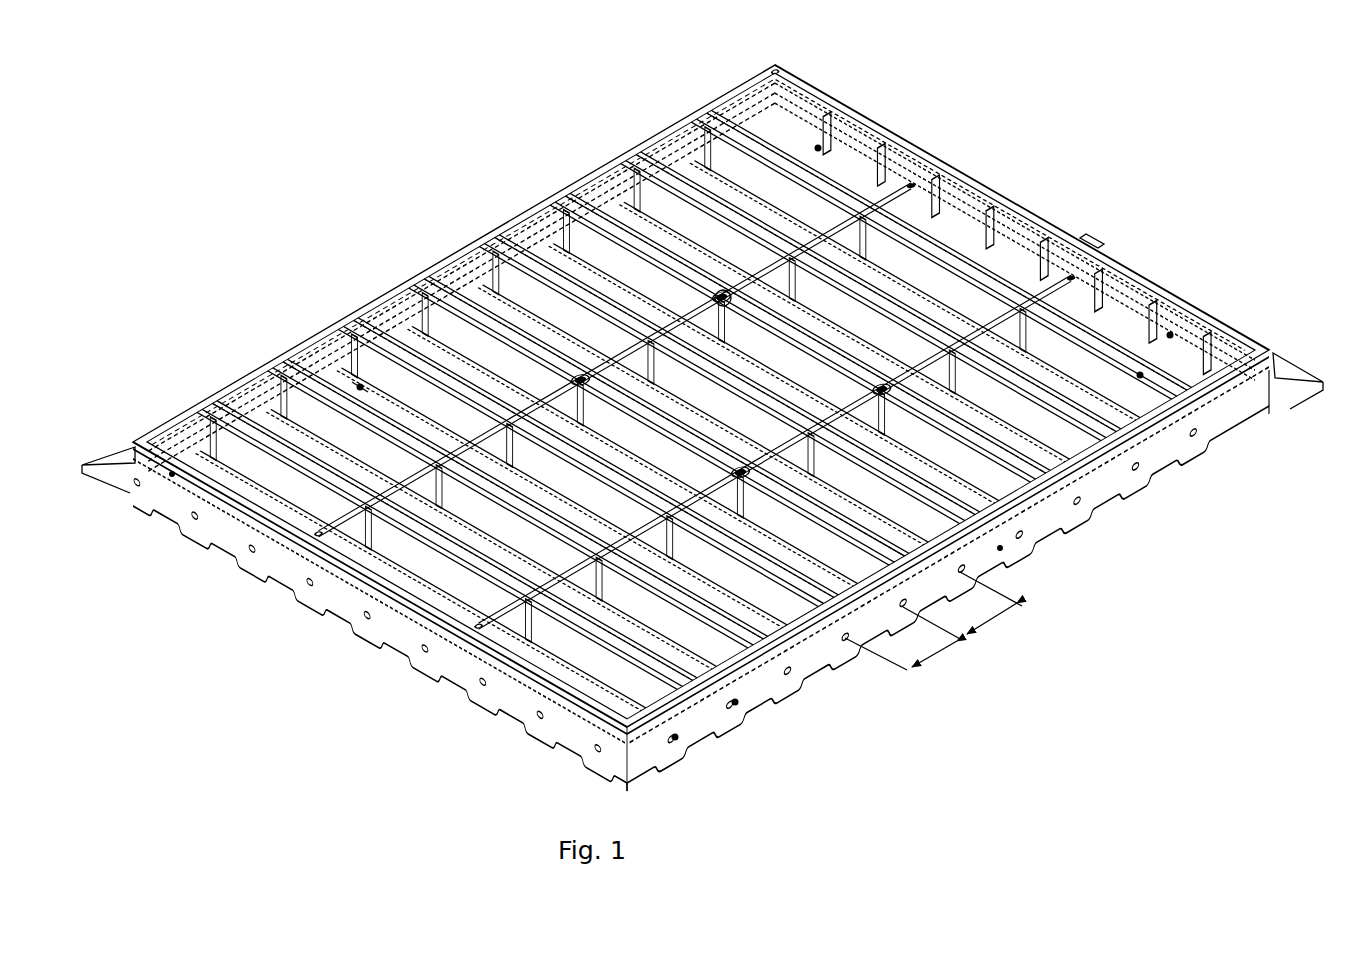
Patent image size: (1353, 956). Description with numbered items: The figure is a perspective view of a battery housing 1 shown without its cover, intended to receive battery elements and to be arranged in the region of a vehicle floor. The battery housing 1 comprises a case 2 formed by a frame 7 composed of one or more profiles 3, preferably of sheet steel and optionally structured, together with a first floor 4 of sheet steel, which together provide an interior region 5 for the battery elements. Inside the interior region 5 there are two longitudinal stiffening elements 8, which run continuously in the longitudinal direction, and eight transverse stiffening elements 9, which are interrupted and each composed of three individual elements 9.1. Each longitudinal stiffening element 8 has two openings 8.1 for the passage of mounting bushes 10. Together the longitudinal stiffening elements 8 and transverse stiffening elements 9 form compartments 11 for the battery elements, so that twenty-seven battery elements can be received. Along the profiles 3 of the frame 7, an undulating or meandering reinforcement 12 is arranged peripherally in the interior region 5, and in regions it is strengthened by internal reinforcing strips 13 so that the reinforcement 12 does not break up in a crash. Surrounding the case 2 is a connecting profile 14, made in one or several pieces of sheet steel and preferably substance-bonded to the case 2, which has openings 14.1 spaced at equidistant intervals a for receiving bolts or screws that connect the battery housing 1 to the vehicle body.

The battery housing 1 is at (448, 170).
The case 2 is at (968, 150).
The profiles 3 is at (200, 398).
The first floor 4 is at (358, 385).
The interior region 5 is at (830, 170).
The frame 7 is at (1092, 243).
The longitudinal stiffening elements 8 is at (1070, 272).
The openings 8.1 is at (718, 292).
The transverse stiffening elements 9 is at (1140, 375).
The individual elements 9.1 is at (699, 396).
The mounting bushes 10 is at (727, 294).
The compartments 11 is at (282, 420).
The undulating or meandering reinforcement 12 is at (1170, 335).
The internal reinforcing strips 13 is at (818, 148).
The connecting profile 14 is at (1000, 548).
The openings 14.1 is at (675, 737).
The equidistant intervals a is at (933, 630).